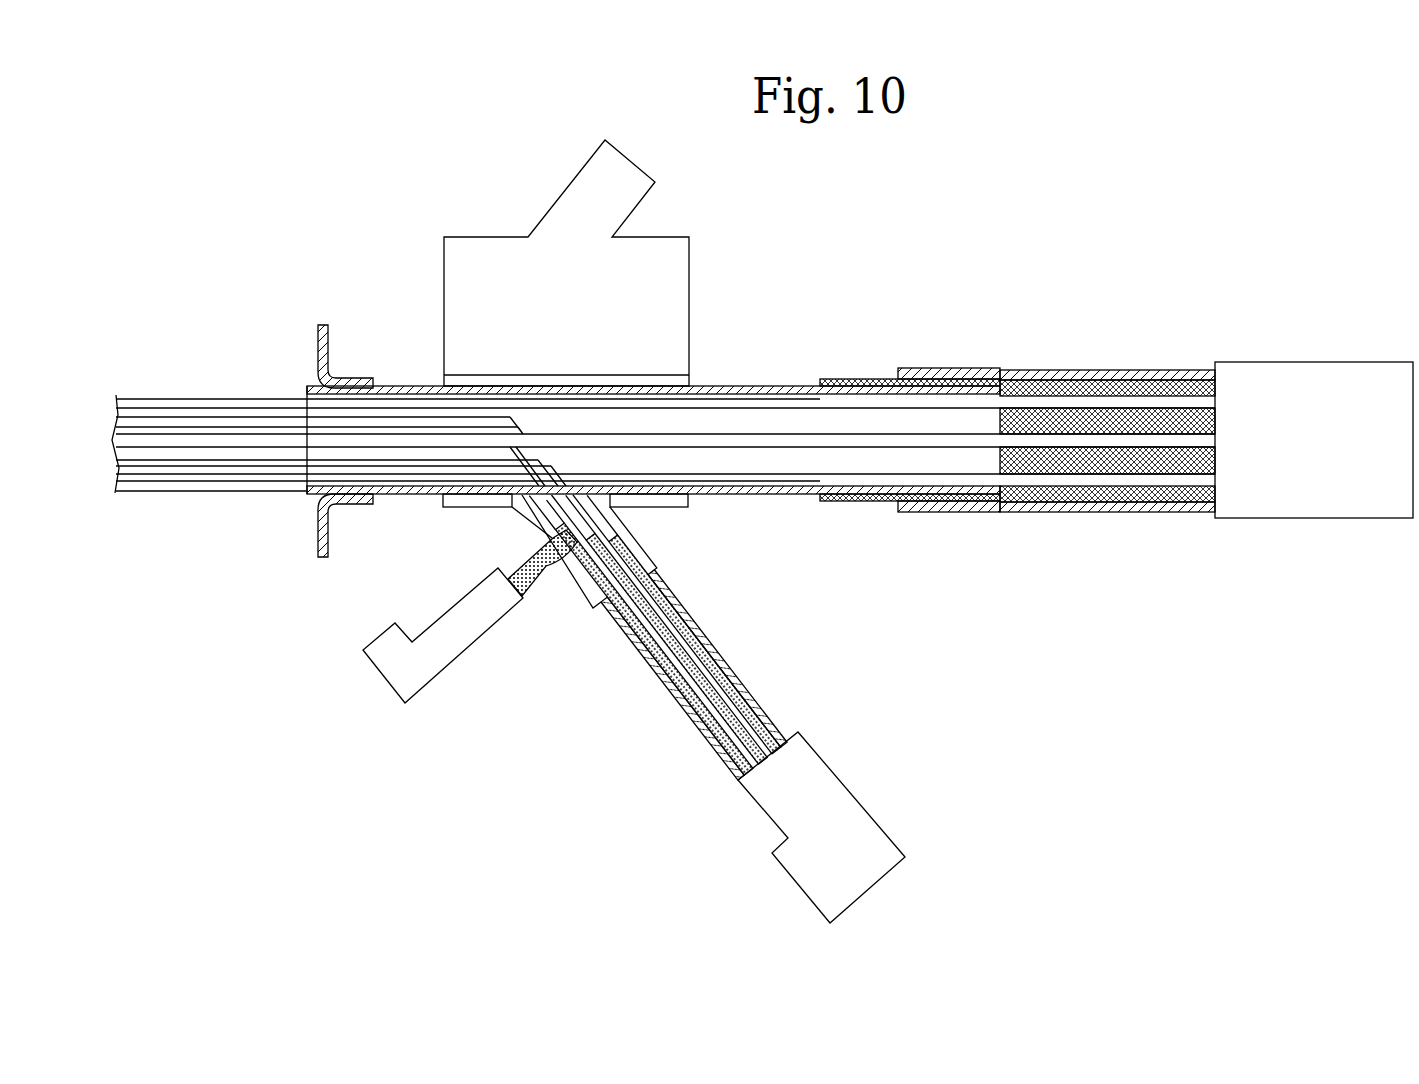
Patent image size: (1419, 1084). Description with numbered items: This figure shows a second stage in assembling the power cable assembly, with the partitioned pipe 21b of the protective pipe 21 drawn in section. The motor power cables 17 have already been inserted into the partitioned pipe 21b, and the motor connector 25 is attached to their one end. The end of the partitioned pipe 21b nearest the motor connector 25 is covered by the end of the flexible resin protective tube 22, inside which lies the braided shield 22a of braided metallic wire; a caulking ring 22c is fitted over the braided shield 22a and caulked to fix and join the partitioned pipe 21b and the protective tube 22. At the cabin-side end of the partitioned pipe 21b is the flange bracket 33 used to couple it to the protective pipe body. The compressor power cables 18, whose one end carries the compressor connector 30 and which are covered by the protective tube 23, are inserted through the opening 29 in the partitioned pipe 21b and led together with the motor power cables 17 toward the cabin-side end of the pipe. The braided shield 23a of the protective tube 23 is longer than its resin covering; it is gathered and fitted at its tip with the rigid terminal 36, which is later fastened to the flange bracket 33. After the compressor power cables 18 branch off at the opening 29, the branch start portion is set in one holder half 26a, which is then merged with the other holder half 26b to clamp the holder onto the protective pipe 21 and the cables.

The motor power cables 17 is at (762, 488).
The compressor power cables 18 is at (730, 668).
The protective pipe 21 is at (427, 378).
The partitioned pipe 21b is at (398, 384).
The protective tube 22 is at (1062, 370).
The braided shield 22a is at (857, 379).
The caulking ring 22c is at (950, 368).
The protective tube 23 is at (697, 720).
The braided shield 23a is at (537, 571).
The motor connector 25 is at (1334, 362).
The holder half 26a is at (686, 515).
The holder half 26b is at (697, 276).
The opening 29 is at (509, 508).
The compressor connector 30 is at (850, 787).
The flange bracket 33 is at (323, 325).
The rigid terminal 36 is at (461, 655).